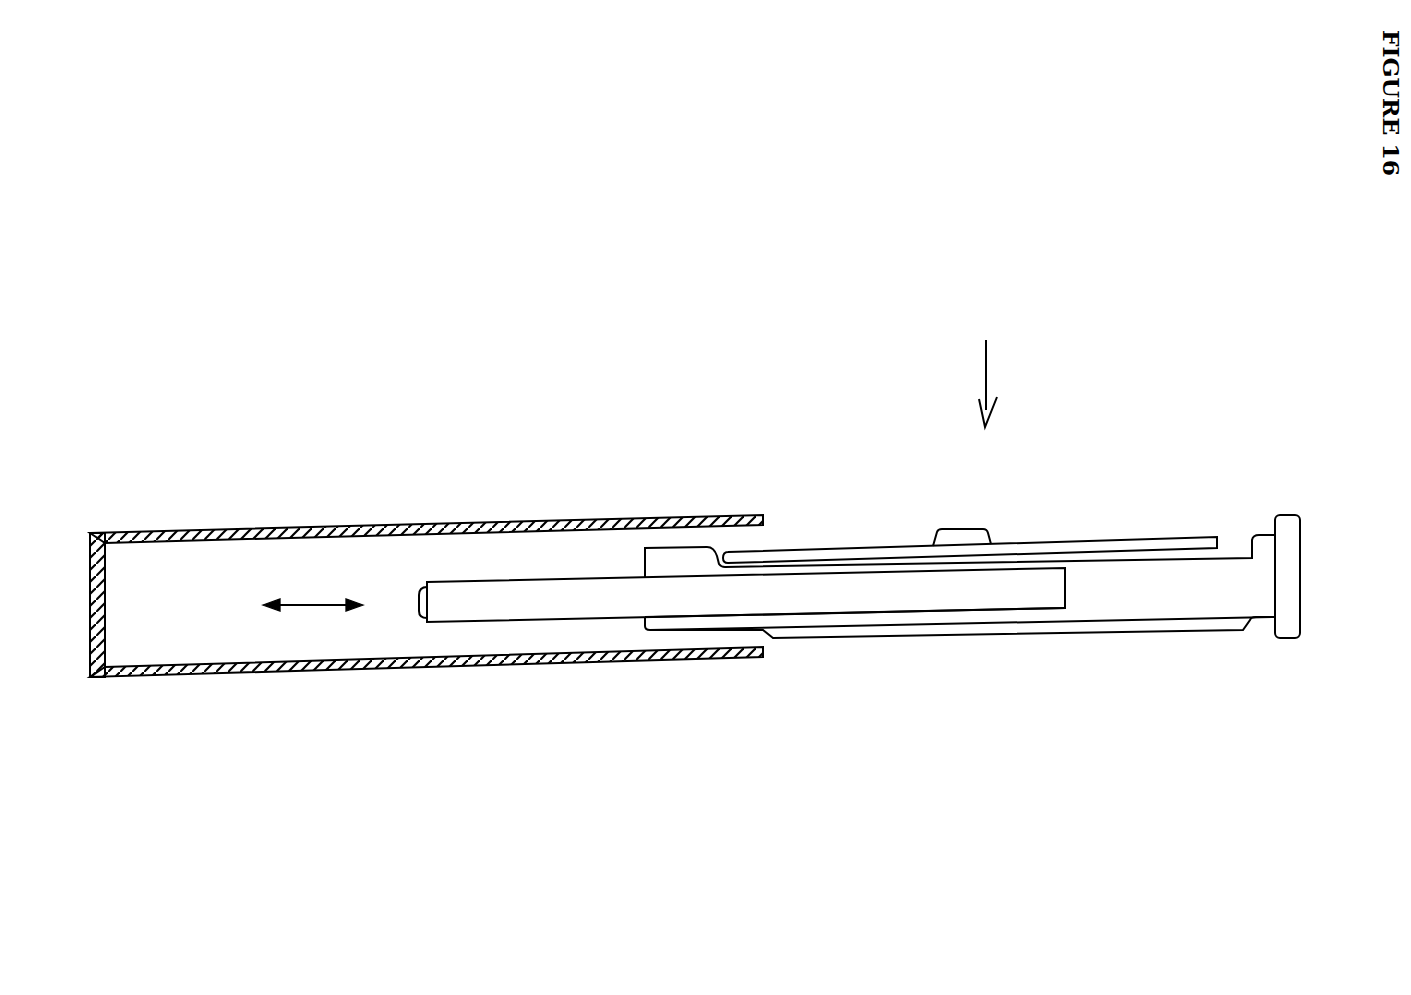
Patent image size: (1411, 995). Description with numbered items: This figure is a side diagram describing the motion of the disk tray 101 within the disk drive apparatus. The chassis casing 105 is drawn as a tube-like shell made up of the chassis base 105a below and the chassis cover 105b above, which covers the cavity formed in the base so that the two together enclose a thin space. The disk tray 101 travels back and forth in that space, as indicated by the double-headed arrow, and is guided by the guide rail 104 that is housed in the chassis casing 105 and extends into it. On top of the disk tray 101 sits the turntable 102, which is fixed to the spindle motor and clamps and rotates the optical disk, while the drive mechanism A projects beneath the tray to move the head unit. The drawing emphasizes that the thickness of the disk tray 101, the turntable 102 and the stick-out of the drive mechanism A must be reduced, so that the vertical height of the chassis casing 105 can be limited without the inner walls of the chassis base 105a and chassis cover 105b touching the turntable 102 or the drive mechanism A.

The disk tray 101 is at (1163, 607).
The turntable 102 is at (967, 527).
The guide rail 104 is at (538, 608).
The chassis casing 105 is at (426, 588).
The chassis base 105a is at (313, 673).
The chassis cover 105b is at (355, 522).
The drive mechanism A is at (892, 645).